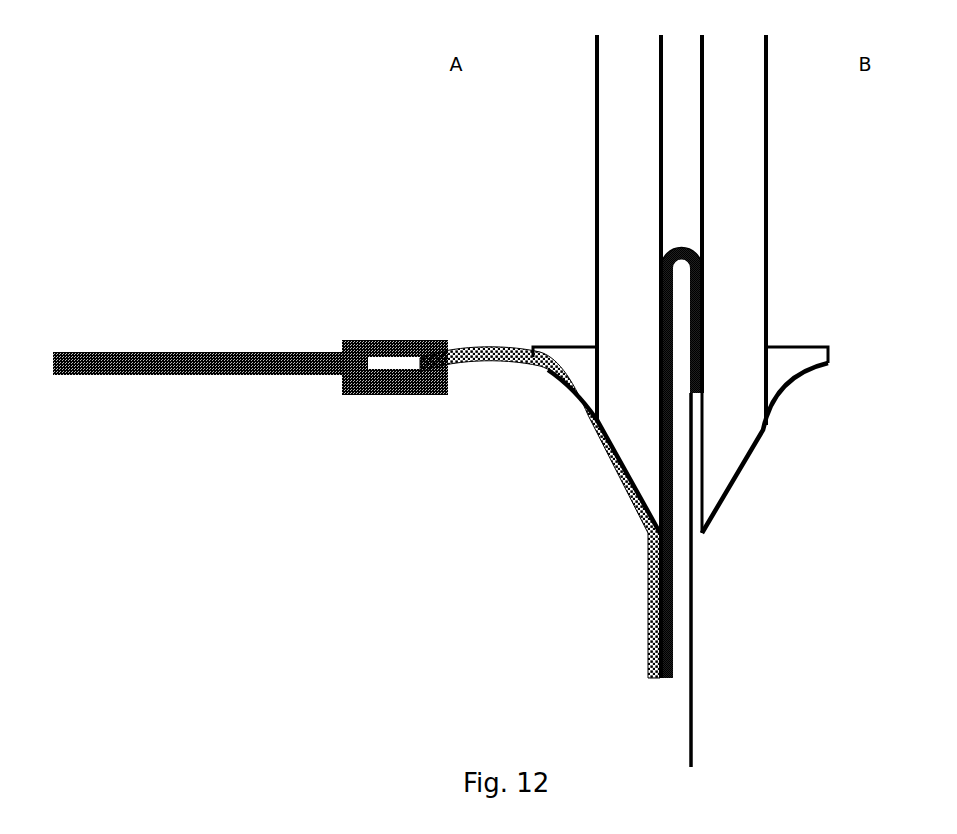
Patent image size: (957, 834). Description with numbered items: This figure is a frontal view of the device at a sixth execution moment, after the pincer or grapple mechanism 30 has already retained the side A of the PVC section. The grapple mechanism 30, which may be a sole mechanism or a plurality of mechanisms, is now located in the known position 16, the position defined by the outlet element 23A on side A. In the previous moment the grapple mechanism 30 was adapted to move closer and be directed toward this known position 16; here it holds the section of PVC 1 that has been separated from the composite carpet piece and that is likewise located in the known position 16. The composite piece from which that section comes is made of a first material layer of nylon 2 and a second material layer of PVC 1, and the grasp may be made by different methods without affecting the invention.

The grapple mechanism 30 is at (182, 360).
The known position 16 is at (425, 340).
The PVC 1 is at (483, 358).
The outlet element 23A is at (571, 355).
The nylon 2 is at (703, 275).